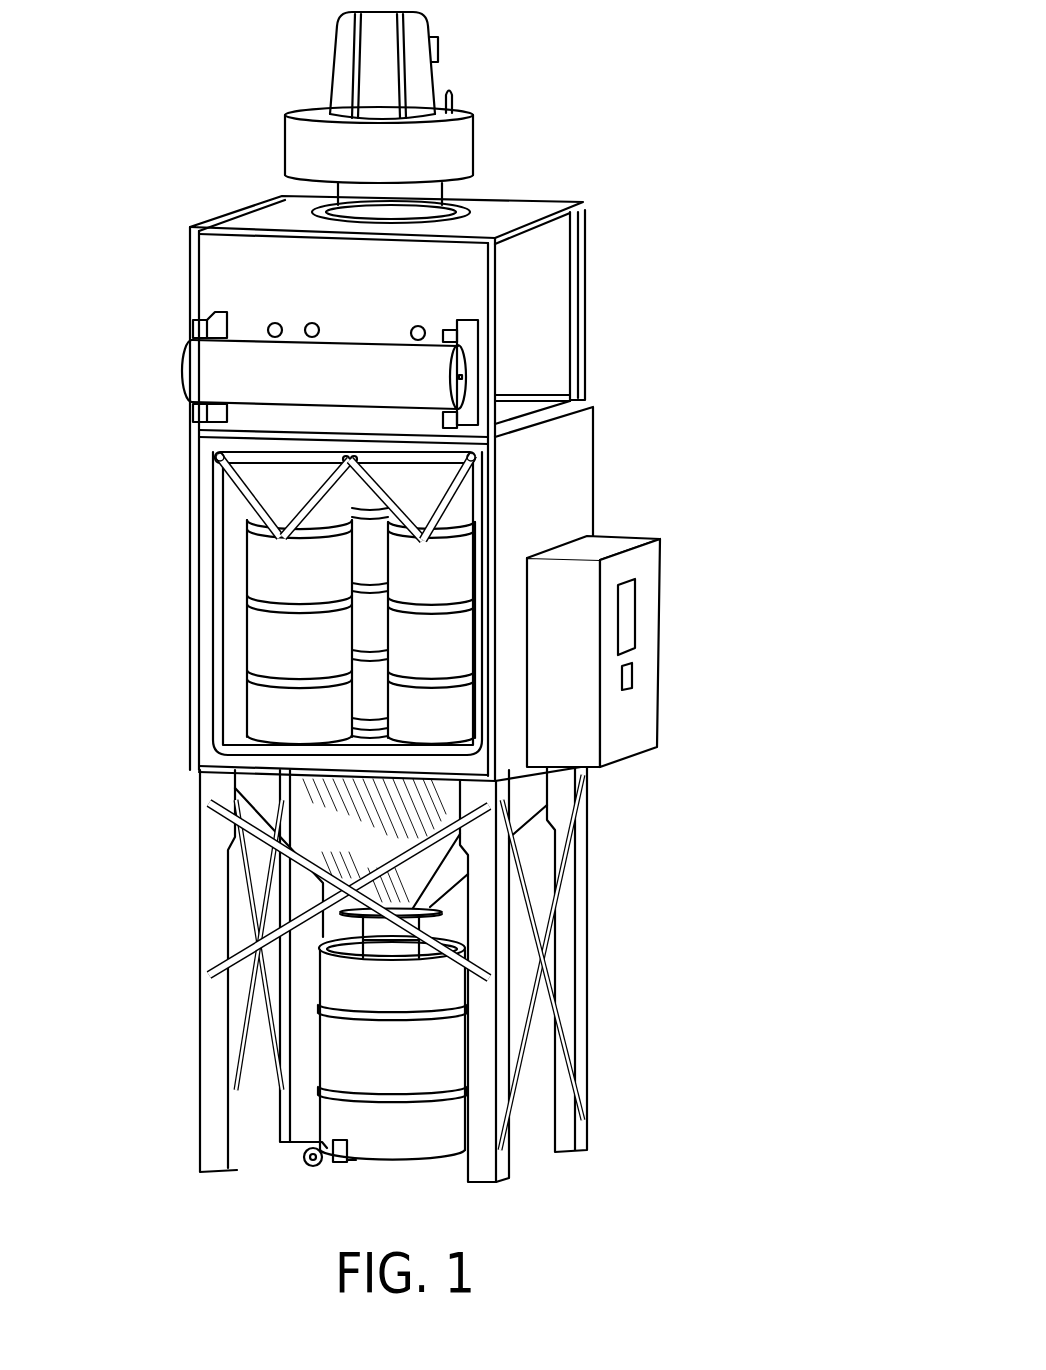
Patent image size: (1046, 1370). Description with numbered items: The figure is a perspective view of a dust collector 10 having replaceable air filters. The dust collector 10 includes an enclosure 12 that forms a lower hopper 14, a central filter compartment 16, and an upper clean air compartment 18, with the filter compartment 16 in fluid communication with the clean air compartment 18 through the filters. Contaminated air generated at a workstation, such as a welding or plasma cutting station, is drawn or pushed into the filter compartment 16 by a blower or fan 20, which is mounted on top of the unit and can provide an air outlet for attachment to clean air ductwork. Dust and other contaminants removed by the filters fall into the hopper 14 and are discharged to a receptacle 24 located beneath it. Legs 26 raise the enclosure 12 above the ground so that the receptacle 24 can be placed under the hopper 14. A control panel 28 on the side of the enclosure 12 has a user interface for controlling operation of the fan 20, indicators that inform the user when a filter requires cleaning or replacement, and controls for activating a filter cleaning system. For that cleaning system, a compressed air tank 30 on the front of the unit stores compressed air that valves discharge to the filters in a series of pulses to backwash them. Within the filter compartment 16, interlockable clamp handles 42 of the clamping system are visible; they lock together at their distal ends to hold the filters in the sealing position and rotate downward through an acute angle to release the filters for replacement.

The dust collector 10 is at (678, 292).
The enclosure 12 is at (190, 717).
The hopper 14 is at (270, 808).
The filter compartment 16 is at (596, 442).
The clean air compartment 18 is at (586, 252).
The fan 20 is at (285, 143).
The receptacle 24 is at (383, 1161).
The legs 26 is at (588, 1140).
The control panel 28 is at (660, 693).
The compressed air tank 30 is at (190, 373).
The clamp handles 42 is at (232, 479).